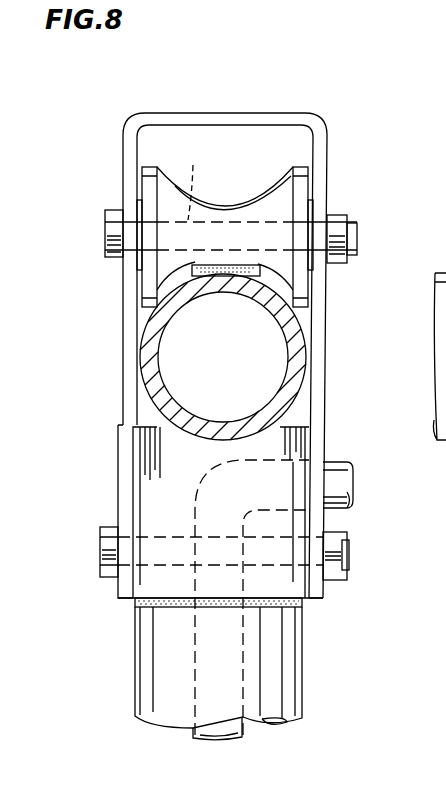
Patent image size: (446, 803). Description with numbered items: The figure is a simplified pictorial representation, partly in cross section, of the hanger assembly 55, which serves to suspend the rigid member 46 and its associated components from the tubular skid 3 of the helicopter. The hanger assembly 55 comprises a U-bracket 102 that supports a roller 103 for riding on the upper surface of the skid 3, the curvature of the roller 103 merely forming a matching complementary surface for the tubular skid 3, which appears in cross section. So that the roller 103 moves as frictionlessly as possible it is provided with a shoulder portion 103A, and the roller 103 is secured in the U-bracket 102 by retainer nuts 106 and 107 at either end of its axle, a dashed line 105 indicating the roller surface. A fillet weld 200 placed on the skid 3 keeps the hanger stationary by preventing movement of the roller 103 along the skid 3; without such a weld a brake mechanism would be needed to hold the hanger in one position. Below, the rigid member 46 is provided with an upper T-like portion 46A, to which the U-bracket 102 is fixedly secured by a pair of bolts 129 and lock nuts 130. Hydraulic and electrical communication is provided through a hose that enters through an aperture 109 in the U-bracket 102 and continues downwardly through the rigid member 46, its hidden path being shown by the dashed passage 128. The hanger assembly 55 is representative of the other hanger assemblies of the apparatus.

The hanger assembly 55 is at (293, 95).
The U-bracket 102 is at (331, 141).
The roller 103 is at (276, 184).
The shoulder portion 103A is at (137, 208).
The roller groove line 105 is at (175, 177).
The retainer nut 106 is at (340, 263).
The retainer nut 107 is at (108, 262).
The fillet weld 200 is at (202, 278).
The skid 3 is at (308, 332).
The upper T-like portion 46A is at (137, 425).
The elbow passage 128 is at (207, 490).
The aperture 109 is at (327, 450).
The bolt 129 is at (100, 546).
The lock nut 130 is at (348, 542).
The rigid member 46 is at (135, 668).